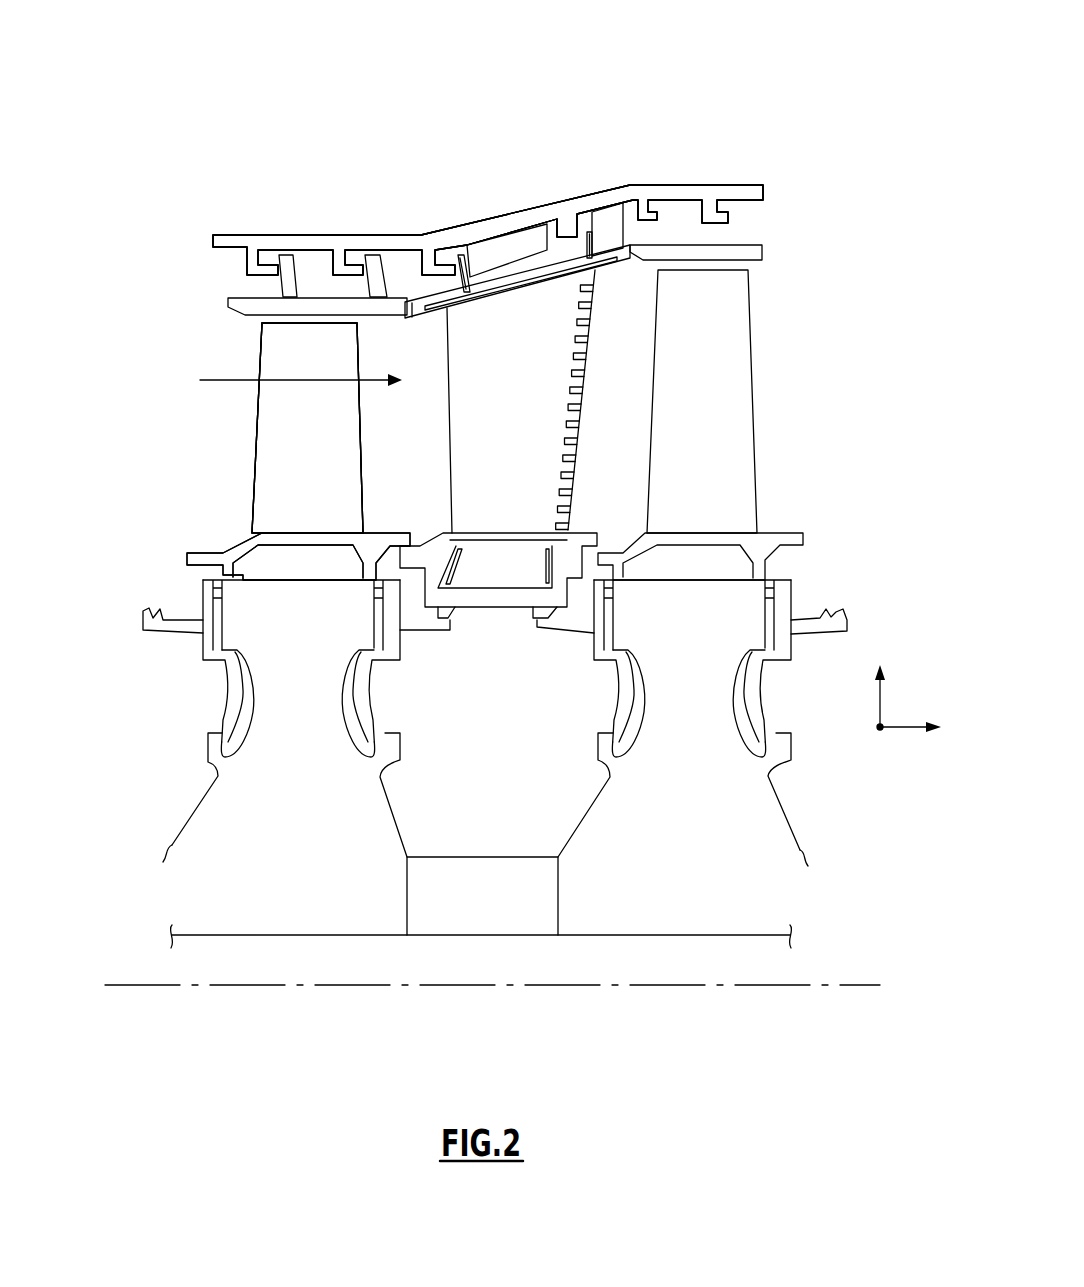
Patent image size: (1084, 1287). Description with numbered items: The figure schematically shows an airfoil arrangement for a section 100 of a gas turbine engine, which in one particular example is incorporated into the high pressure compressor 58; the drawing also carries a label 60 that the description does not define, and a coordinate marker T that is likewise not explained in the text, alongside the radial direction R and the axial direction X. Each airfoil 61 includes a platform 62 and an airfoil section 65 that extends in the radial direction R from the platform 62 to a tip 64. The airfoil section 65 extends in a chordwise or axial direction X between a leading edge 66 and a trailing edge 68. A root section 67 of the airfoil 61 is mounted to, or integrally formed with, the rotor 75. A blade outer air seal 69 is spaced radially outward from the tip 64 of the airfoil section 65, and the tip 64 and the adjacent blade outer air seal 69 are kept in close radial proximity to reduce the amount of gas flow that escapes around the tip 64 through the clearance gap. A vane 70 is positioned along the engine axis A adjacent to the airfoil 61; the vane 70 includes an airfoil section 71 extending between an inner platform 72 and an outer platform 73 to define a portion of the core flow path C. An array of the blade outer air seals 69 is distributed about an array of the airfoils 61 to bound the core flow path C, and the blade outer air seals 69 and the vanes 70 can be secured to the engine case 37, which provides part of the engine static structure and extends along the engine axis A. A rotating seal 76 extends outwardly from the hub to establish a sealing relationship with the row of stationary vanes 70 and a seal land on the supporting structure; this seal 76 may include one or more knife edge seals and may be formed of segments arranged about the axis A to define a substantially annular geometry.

The section 100 is at (259, 72).
The high pressure compressor 58 is at (138, 180).
The rotor assembly 60 is at (108, 380).
The rotating seal 76 is at (607, 165).
The engine case 37 is at (268, 235).
The blade outer air seal 69 is at (228, 302).
The tip 64 is at (282, 320).
The airfoil section 65 is at (287, 435).
The leading edge 66 is at (255, 476).
The trailing edge 68 is at (363, 480).
The airfoil 61 is at (362, 428).
The platform 62 is at (202, 552).
The root section 67 is at (240, 627).
The rotor 75 is at (186, 824).
The vane 70 is at (588, 400).
The airfoil section 71 is at (533, 480).
The inner platform 72 is at (587, 538).
The outer platform 73 is at (613, 262).
The core flow path C is at (212, 383).
The engine axis A is at (845, 985).
The radial direction R is at (890, 685).
The axial direction X is at (921, 727).
The circumferential direction T is at (880, 730).